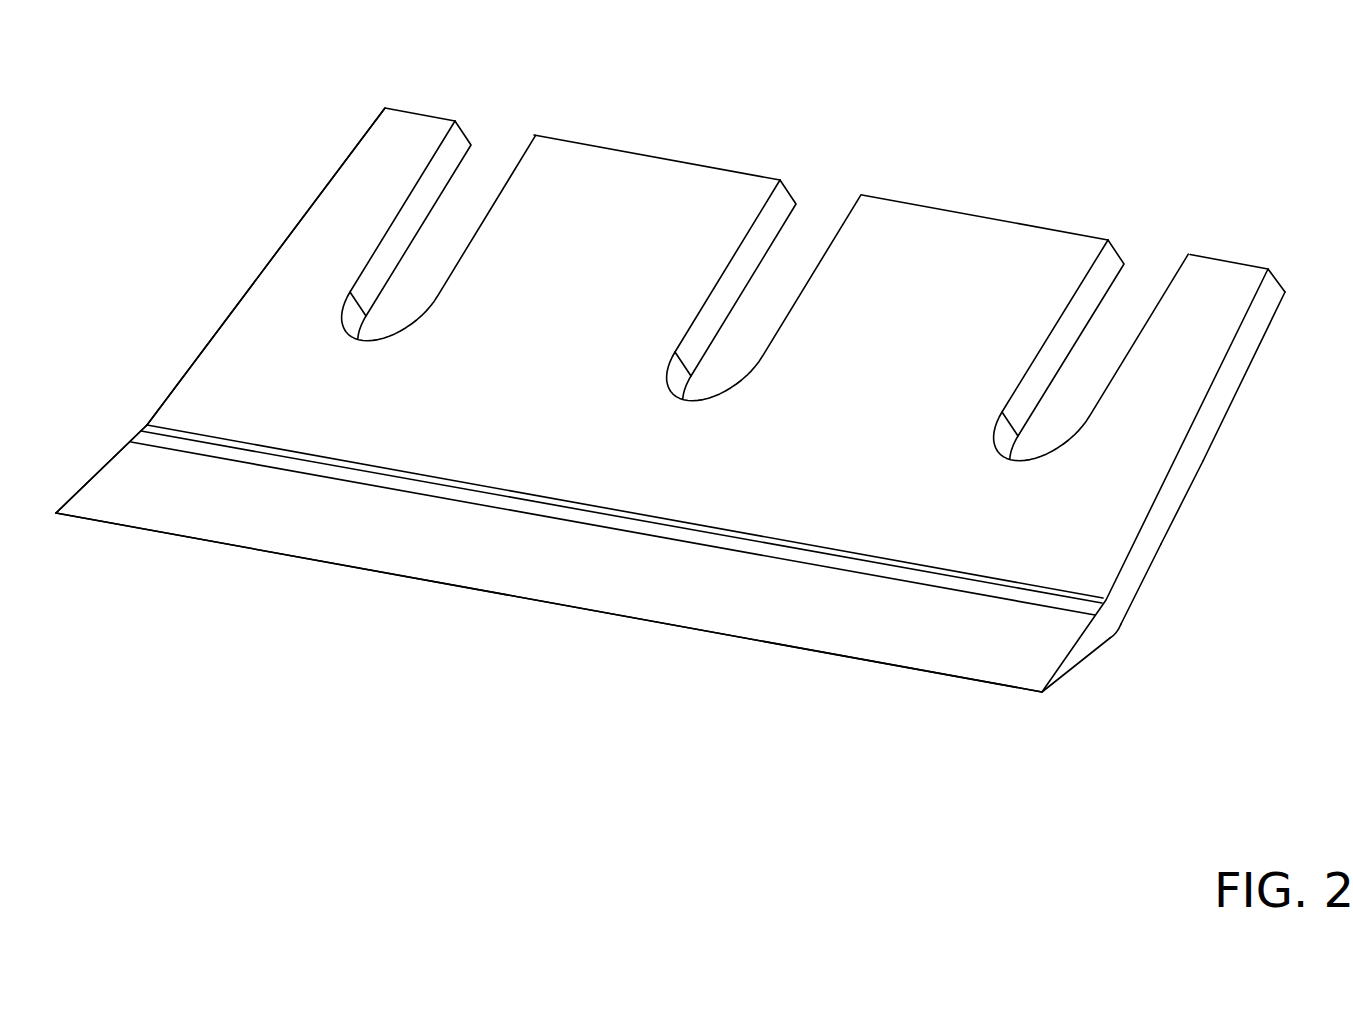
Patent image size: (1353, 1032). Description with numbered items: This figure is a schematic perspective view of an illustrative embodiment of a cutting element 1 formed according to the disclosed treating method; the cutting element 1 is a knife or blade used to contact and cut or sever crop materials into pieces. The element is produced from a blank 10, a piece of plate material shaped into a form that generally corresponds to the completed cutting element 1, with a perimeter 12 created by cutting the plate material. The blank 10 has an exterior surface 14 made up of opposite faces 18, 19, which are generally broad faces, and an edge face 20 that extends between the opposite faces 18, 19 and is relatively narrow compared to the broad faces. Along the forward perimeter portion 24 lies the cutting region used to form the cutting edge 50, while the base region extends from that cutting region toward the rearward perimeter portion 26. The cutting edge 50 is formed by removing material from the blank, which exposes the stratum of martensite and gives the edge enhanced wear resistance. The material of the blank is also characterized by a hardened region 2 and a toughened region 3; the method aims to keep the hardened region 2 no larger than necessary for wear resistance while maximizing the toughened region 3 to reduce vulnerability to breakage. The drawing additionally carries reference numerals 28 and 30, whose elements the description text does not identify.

The cutting element 1 is at (1072, 99).
The hardened region 2 is at (800, 623).
The toughened region 3 is at (990, 243).
The blank 10 is at (1203, 285).
The perimeter 12 is at (1110, 637).
The exterior surface 14 is at (1122, 495).
The first opposite face 18 is at (1150, 437).
The second opposite face 19 is at (1250, 372).
The edge face 20 is at (903, 200).
The forward perimeter portion 24 is at (880, 668).
The rearward perimeter portion 26 is at (668, 159).
The side edge 28 is at (199, 346).
The chamfer 30 is at (1143, 552).
The cutting edge 50 is at (575, 608).